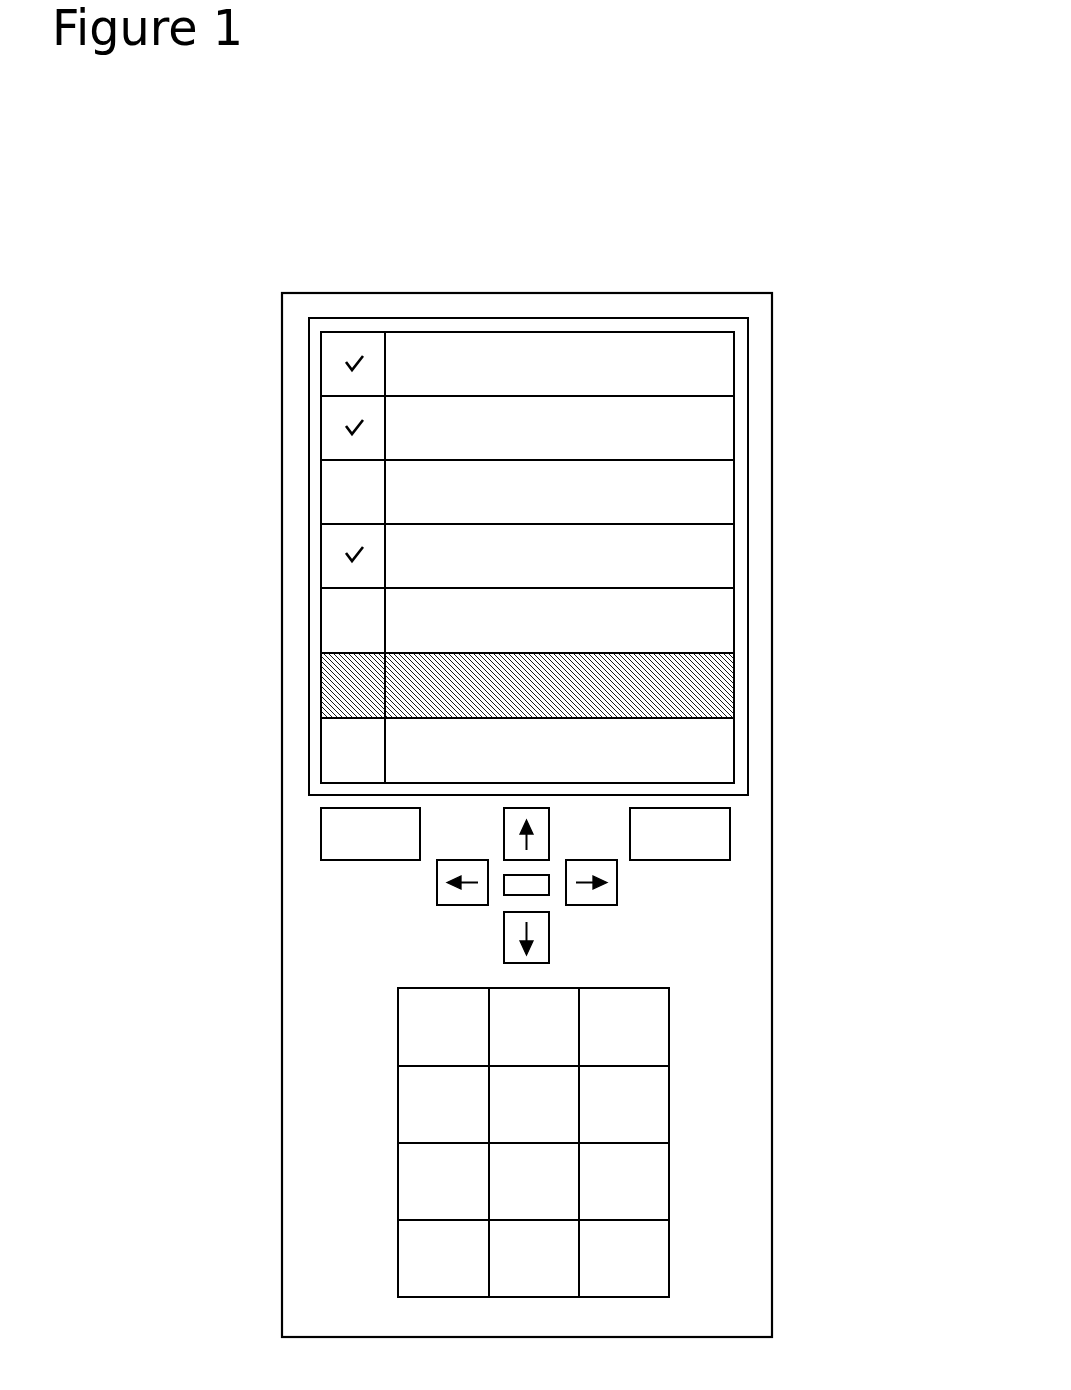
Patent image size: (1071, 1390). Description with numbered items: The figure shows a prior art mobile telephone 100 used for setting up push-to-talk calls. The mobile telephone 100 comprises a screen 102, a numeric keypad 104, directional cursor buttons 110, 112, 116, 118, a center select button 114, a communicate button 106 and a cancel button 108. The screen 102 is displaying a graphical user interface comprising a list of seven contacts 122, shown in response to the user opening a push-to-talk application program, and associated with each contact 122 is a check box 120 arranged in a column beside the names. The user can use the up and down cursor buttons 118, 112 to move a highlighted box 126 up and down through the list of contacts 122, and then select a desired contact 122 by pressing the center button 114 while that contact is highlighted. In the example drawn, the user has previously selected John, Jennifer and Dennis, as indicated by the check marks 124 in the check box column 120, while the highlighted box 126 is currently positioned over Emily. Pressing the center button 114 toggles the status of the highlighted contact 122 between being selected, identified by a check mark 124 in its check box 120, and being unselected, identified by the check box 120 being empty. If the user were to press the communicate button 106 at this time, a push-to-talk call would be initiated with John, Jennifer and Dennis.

The mobile telephone 100 is at (278, 221).
The screen 102 is at (750, 503).
The numeric keypad 104 is at (669, 1168).
The communicate button 106 is at (321, 843).
The cancel button 108 is at (730, 833).
The directional cursor button 110 is at (620, 875).
The down cursor button 112 is at (549, 950).
The center button 114 is at (512, 897).
The directional cursor button 116 is at (437, 895).
The up cursor button 118 is at (504, 822).
The check box 120 is at (348, 296).
The contact 122 is at (543, 296).
The check mark 124 is at (345, 357).
The highlighted box 126 is at (322, 680).